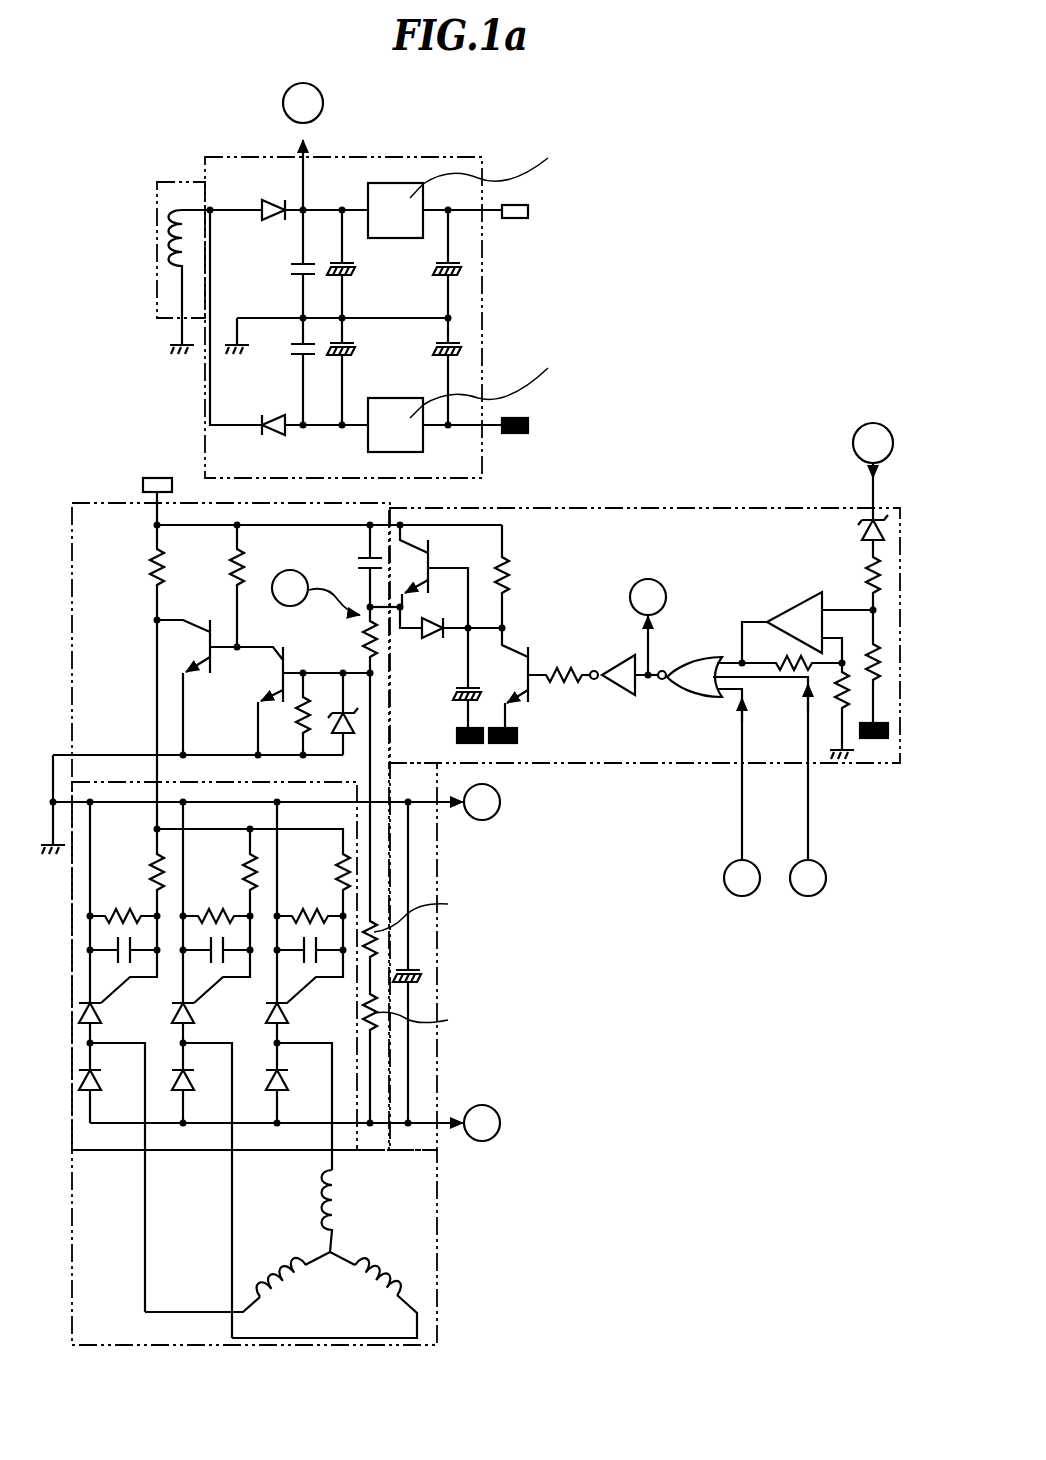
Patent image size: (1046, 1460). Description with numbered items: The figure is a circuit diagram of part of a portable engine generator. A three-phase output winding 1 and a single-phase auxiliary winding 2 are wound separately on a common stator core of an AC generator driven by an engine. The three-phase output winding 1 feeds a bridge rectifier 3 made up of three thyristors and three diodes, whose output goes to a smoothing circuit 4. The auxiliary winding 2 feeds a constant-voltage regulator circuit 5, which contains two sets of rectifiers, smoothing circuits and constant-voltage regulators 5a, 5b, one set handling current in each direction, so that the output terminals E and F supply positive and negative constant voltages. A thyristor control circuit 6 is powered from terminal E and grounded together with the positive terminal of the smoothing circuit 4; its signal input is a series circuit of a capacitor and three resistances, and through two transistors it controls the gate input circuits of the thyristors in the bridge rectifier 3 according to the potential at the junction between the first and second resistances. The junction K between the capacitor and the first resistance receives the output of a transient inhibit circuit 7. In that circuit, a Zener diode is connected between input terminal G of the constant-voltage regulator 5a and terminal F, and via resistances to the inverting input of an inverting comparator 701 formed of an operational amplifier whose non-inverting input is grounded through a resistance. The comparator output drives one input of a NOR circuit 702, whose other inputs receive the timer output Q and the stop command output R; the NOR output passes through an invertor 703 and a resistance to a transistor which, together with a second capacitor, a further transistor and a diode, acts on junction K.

The three-phase output winding 1 is at (437, 1192).
The single-phase auxiliary winding 2 is at (190, 183).
The bridge rectifier 3 is at (72, 1072).
The smoothing circuit 4 is at (437, 1072).
The constant-voltage regulator circuit 5 is at (504, 280).
The constant-voltage regulator 5a is at (395, 240).
The constant-voltage regulator 5b is at (395, 399).
The thyristor control circuit 6 is at (115, 502).
The transient inhibit circuit 7 is at (644, 659).
The inverting comparator 701 is at (796, 606).
The NOR circuit 702 is at (703, 698).
The invertor 703 is at (618, 697).